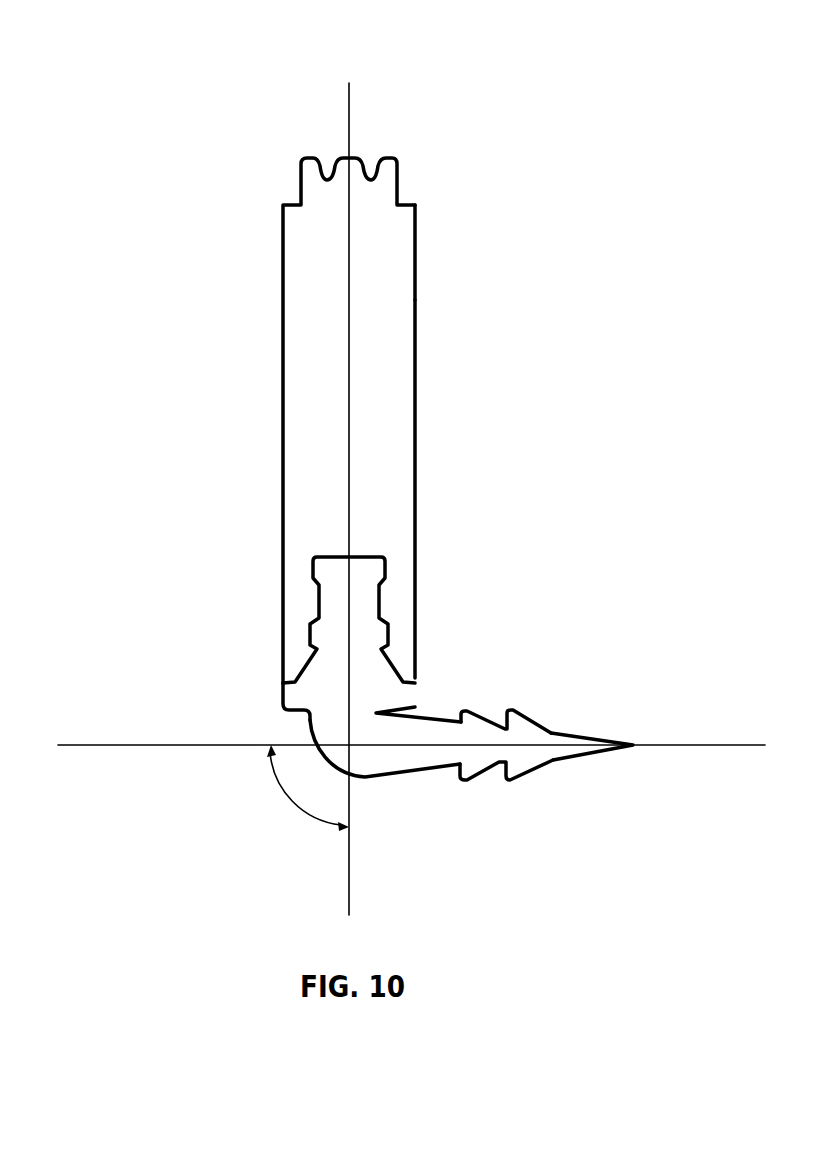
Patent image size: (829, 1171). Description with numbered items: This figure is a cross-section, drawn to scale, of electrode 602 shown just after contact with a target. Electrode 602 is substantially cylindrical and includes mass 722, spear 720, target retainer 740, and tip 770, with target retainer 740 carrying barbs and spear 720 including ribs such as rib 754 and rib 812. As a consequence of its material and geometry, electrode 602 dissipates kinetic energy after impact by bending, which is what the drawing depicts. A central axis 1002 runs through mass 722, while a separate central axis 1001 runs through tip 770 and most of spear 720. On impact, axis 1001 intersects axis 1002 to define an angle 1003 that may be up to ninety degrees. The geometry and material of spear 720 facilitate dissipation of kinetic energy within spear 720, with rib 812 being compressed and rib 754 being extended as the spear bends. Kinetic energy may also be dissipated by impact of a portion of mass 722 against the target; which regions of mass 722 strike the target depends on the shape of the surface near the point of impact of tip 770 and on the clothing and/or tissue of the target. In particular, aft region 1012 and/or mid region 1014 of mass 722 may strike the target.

The electrode 602 is at (142, 48).
The central axis 1001 is at (90, 745).
The central axis 1002 is at (350, 105).
The angle 1003 is at (302, 812).
The mass 722 is at (282, 418).
The aft region 1012 is at (417, 232).
The mid region 1014 is at (417, 397).
The spear 720 is at (283, 714).
The rib 812 is at (428, 718).
The target retainer 740 is at (548, 818).
The rib 754 is at (403, 777).
The tip 770 is at (595, 737).